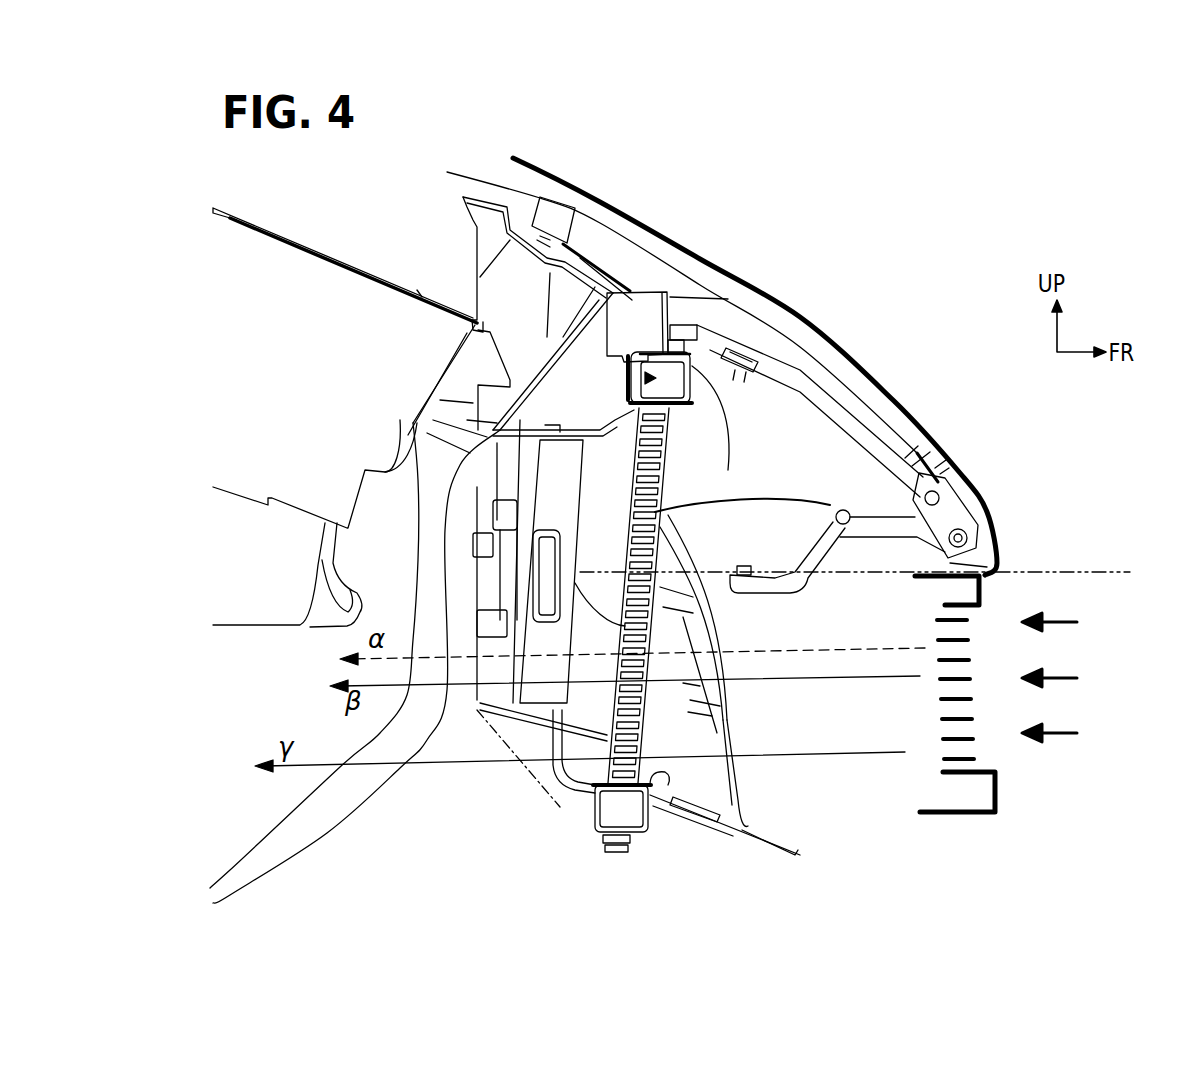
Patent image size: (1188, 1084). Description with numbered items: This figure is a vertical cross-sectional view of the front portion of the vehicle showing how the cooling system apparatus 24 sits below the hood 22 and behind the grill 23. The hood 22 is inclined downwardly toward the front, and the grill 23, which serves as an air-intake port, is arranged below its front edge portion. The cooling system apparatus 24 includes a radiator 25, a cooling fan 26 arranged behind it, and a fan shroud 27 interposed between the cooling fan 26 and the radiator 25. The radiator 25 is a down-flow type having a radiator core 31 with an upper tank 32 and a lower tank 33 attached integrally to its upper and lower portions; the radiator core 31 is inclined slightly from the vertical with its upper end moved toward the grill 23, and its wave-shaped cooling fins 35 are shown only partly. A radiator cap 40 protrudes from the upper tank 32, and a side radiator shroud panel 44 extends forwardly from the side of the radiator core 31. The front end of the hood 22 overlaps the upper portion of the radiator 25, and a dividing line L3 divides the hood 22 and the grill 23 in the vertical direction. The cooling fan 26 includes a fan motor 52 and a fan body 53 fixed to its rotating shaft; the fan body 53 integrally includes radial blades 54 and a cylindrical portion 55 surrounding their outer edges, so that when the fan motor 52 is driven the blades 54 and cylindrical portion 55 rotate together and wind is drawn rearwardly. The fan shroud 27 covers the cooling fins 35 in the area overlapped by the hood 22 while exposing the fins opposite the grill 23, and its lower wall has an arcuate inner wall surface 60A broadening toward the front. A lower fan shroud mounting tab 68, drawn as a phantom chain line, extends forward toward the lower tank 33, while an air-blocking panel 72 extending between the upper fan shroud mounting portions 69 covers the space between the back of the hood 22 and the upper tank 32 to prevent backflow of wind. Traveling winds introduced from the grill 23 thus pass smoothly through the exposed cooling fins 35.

The hood 22 is at (786, 312).
The grill 23 is at (985, 586).
The cooling system apparatus 24 is at (708, 853).
The radiator 25 is at (647, 833).
The cooling fan 26 is at (586, 464).
The fan shroud 27 is at (512, 718).
The radiator core 31 is at (800, 373).
The upper tank 32 is at (729, 356).
The lower tank 33 is at (650, 818).
The cooling fins 35 is at (657, 517).
The radiator cap 40 is at (710, 298).
The side radiator shroud panel 44 is at (745, 808).
The fan motor 52 is at (515, 575).
The fan body 53 is at (578, 543).
The blades 54 is at (550, 483).
The cylindrical portion 55 is at (573, 434).
The inner wall surface 60A is at (590, 605).
The lower fan shroud mounting tab 68 is at (561, 812).
The upper fan shroud mounting portion 69 is at (628, 298).
The air-blocking panel 72 is at (679, 327).
The dividing line L3 is at (1128, 565).